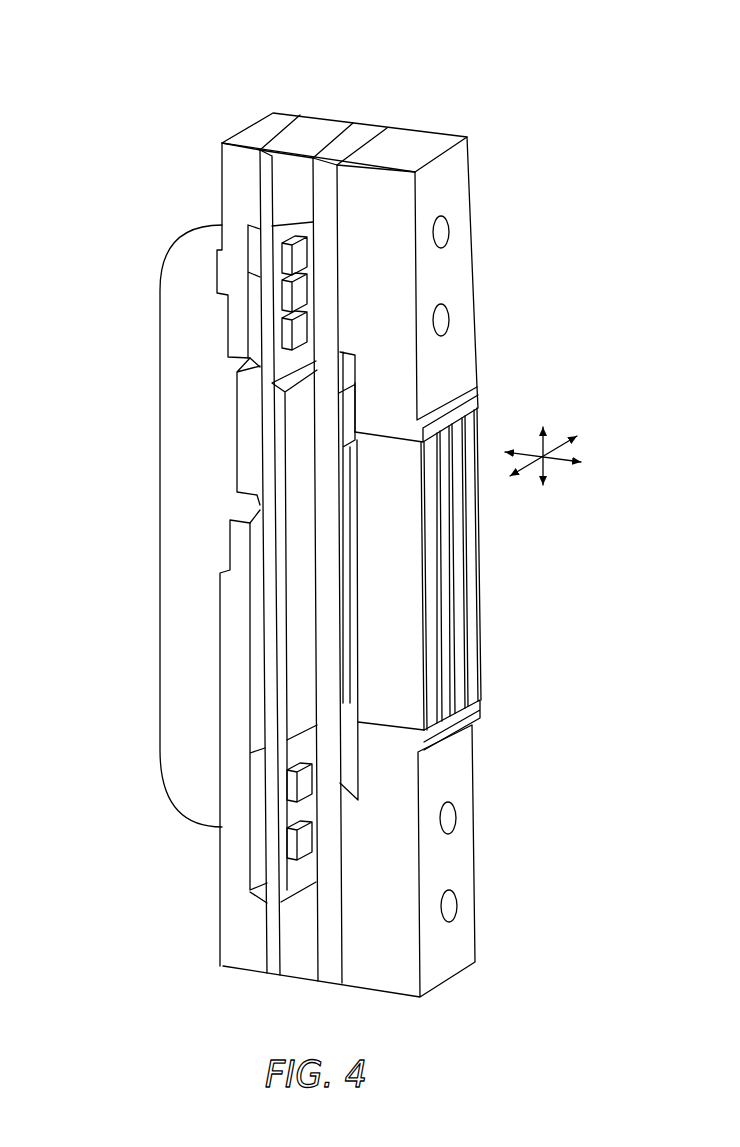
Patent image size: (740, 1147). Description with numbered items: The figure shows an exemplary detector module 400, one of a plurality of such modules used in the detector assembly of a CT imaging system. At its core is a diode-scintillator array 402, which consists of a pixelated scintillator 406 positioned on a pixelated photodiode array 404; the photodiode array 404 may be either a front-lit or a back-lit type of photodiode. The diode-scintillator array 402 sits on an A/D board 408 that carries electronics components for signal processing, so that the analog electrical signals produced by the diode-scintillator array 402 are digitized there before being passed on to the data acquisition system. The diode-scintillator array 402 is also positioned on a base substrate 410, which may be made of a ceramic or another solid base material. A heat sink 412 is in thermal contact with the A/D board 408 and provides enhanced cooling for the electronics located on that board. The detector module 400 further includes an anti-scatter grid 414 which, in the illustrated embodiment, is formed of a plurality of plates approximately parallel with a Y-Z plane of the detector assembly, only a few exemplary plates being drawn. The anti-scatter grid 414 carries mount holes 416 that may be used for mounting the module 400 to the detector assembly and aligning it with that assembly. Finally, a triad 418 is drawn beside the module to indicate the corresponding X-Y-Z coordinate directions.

The detector module 400 is at (487, 68).
The diode-scintillator array 402 is at (310, 448).
The pixelated photodiode array 404 is at (340, 602).
The pixelated scintillator 406 is at (357, 700).
The A/D board 408 is at (255, 722).
The base substrate 410 is at (327, 183).
The heat sink 412 is at (180, 425).
The anti-scatter grid 414 is at (505, 578).
The mount holes 416 is at (455, 822).
The triad 418 is at (552, 392).